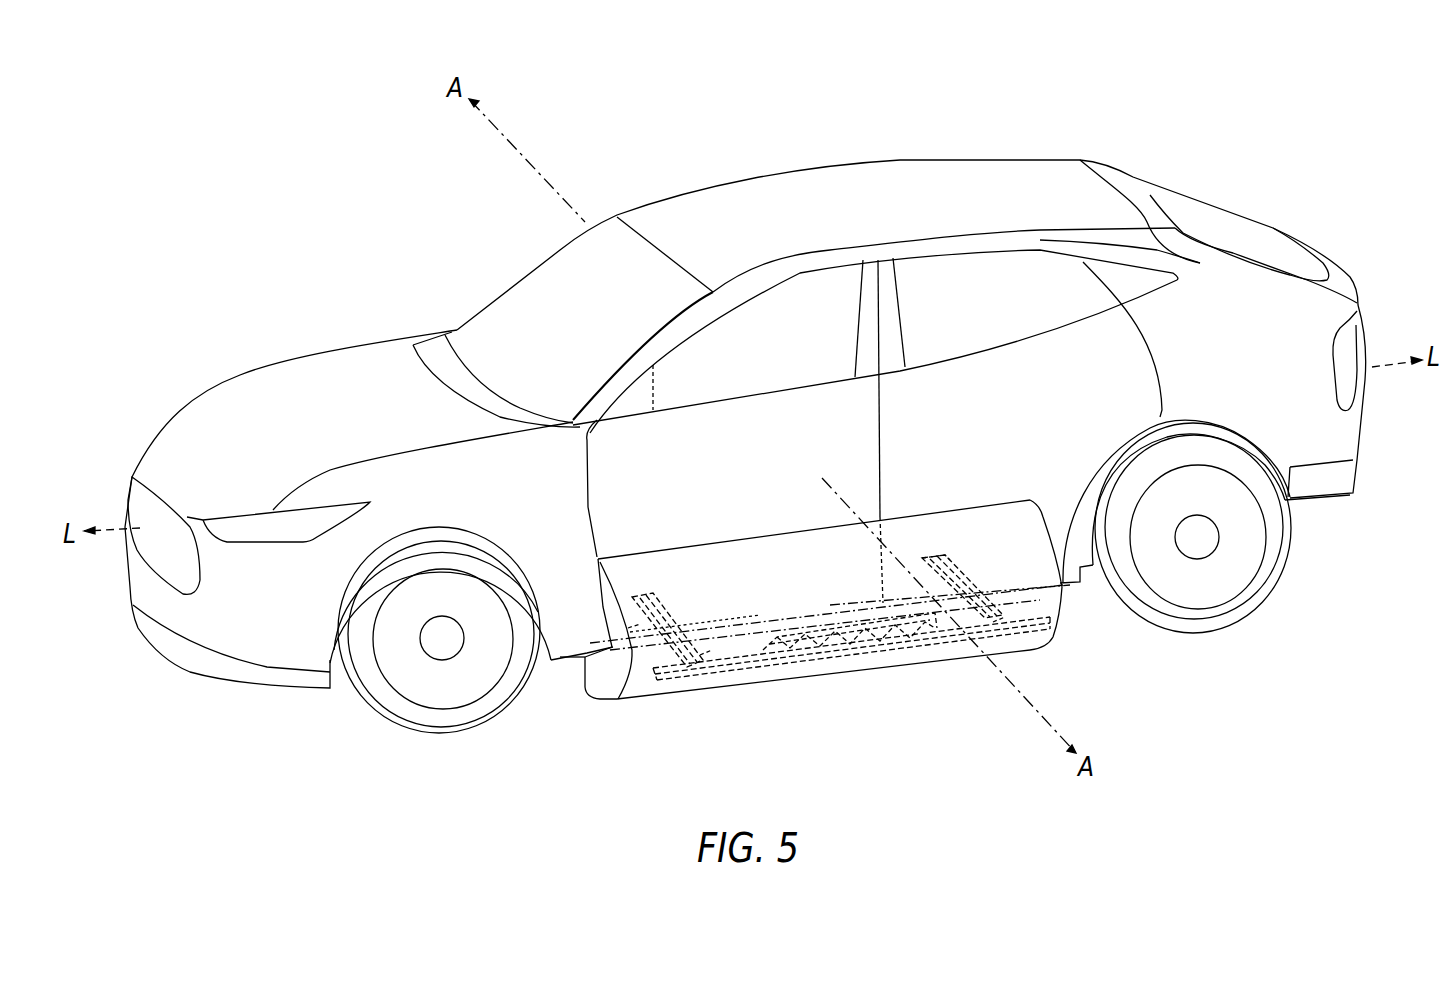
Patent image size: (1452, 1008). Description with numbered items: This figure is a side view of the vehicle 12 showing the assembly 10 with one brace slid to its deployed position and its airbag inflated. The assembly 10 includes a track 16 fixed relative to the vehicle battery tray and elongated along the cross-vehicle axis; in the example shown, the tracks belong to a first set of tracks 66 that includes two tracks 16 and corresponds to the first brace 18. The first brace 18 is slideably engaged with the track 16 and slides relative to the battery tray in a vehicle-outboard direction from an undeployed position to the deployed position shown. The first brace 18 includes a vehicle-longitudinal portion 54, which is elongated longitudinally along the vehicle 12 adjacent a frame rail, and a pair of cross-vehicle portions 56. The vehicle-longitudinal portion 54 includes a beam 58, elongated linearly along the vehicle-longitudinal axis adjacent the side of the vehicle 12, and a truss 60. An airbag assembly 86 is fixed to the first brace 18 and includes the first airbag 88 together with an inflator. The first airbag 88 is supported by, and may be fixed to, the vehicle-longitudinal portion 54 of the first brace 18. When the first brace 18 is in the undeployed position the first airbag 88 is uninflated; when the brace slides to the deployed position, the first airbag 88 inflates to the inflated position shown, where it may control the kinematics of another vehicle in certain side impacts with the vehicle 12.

The assembly 10 is at (567, 705).
The vehicle 12 is at (1213, 125).
The track 16 is at (653, 622).
The first brace 18 is at (733, 647).
The vehicle-longitudinal portion 54 is at (739, 667).
The cross-vehicle portion 56 is at (703, 653).
The beam 58 is at (817, 653).
The truss 60 is at (813, 627).
The first set of tracks 66 is at (961, 550).
The airbag assembly 86 is at (1044, 653).
The first airbag 88 is at (1047, 603).